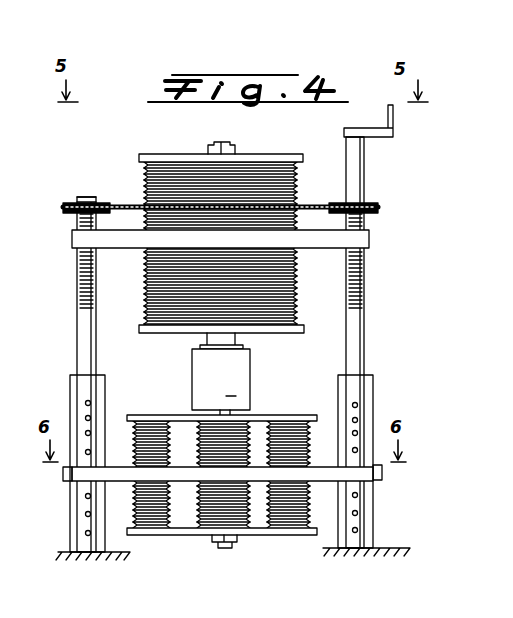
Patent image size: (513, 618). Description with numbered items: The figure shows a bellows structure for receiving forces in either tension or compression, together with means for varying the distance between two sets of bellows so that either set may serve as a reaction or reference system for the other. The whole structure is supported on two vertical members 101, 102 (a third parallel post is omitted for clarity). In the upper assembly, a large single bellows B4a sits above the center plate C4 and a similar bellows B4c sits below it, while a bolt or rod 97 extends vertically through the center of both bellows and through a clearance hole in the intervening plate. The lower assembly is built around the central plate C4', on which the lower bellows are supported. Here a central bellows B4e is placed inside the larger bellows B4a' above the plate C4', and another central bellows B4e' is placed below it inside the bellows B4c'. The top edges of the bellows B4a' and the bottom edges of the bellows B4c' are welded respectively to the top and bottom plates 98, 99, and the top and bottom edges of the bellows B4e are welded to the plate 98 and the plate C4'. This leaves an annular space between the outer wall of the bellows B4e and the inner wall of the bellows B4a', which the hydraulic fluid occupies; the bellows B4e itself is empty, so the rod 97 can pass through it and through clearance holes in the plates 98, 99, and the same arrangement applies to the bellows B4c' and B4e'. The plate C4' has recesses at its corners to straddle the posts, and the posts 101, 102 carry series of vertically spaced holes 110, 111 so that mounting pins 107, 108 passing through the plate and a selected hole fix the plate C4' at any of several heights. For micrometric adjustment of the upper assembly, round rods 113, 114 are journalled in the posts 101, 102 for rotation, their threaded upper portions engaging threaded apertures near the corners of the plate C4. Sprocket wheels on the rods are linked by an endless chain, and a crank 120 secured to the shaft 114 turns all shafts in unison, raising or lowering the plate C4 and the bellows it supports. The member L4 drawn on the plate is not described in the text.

The large single bellows B4a is at (223, 180).
The bellows B4c is at (277, 283).
The center plate C4 is at (200, 242).
The crank 120 is at (371, 132).
The round rod 113 is at (82, 321).
The round rod 114 is at (364, 331).
The series of vertically spaced holes 110 is at (86, 418).
The series of vertically spaced holes 111 is at (358, 420).
The vertical member 101 is at (72, 507).
The vertical member 102 is at (372, 507).
The load member L4 is at (221, 374).
The central bellows B4e is at (162, 426).
The central bellows B4e' is at (167, 531).
The top plate 98 is at (262, 415).
The bottom plate 99 is at (270, 536).
The larger bellows B4a' is at (299, 427).
The bellows B4c' is at (312, 531).
The central plate C4' is at (190, 468).
The mounting pin 107 is at (92, 478).
The mounting pin 108 is at (360, 472).
The bolt or rod 97 is at (225, 545).